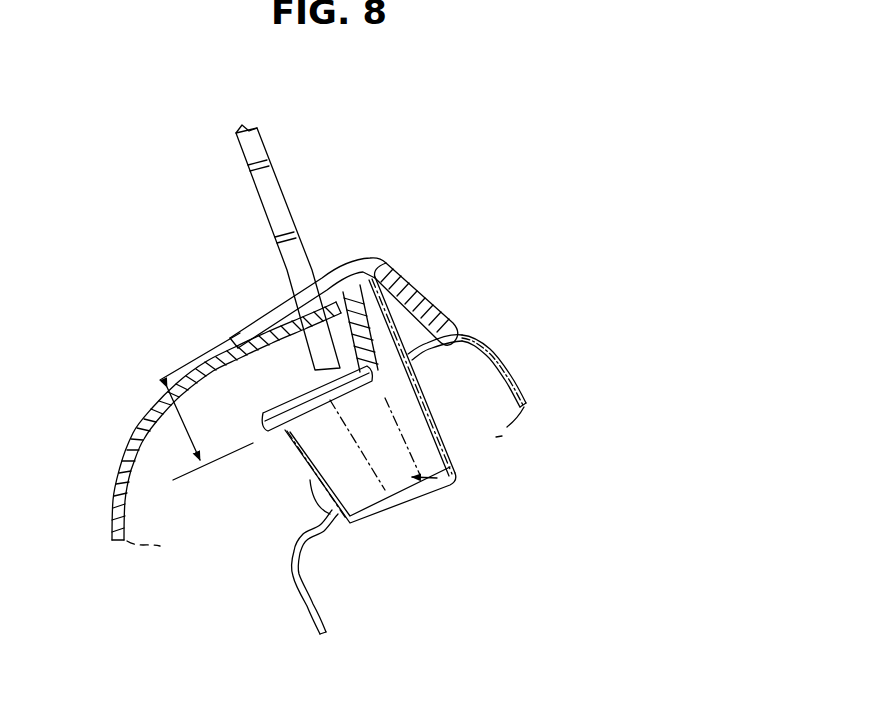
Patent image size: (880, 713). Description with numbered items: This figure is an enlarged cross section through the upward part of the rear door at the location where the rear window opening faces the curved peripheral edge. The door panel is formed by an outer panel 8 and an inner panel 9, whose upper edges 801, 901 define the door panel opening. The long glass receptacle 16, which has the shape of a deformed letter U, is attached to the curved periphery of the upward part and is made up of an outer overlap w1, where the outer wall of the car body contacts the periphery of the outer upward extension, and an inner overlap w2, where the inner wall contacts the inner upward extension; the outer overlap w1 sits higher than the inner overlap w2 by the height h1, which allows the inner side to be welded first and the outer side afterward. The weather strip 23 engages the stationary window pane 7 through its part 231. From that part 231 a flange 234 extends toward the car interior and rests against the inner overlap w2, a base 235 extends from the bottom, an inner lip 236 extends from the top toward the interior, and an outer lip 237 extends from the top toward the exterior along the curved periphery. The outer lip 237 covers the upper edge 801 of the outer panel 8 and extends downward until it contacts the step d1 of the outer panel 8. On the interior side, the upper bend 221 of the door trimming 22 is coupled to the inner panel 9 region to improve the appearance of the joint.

The stationary window pane 7 is at (267, 200).
The outer overlap w1 is at (374, 272).
The weather strip 23 is at (413, 273).
The inner lip 236 is at (265, 304).
The outer lip 237 is at (432, 308).
The upper bend 221 is at (228, 348).
The upper edge 801 is at (452, 336).
The step d1 is at (484, 357).
The outer panel 8 is at (540, 394).
The part 231 is at (355, 380).
The height difference h1 is at (175, 430).
The door trimming 22 is at (112, 508).
The flange 234 is at (270, 428).
The base 235 is at (445, 489).
The upper edge 901 is at (312, 482).
The inner overlap w2 is at (333, 527).
The glass receptacle 16 is at (424, 507).
The inner panel 9 is at (304, 628).